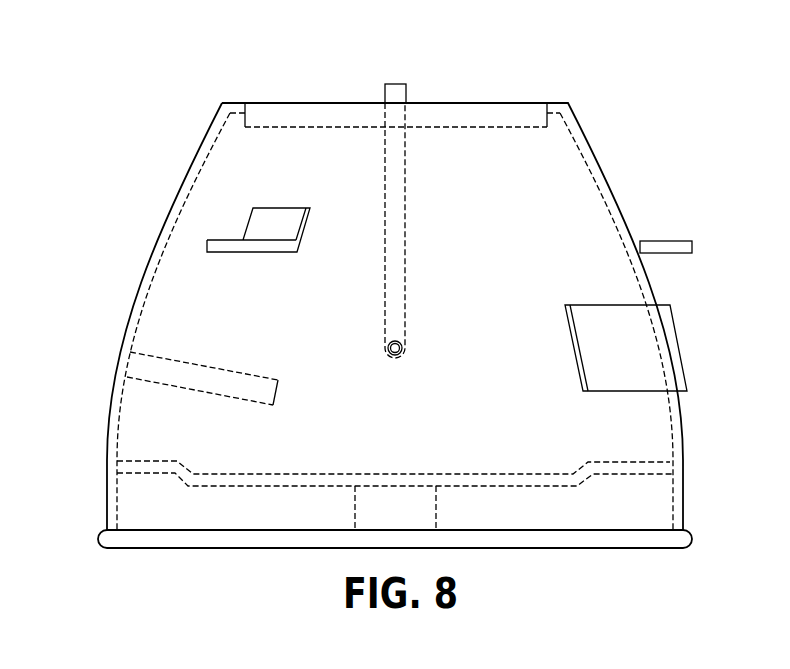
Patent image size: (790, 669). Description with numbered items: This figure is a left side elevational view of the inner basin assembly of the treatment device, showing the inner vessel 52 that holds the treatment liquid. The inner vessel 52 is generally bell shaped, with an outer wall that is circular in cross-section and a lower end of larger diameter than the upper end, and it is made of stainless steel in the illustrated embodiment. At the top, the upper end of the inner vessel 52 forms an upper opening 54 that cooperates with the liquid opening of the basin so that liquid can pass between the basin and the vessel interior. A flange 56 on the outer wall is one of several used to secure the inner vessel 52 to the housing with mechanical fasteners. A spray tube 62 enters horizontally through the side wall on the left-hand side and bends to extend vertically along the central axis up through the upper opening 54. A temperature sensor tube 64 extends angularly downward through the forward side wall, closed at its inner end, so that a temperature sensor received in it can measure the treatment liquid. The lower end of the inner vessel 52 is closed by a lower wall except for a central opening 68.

The inner vessel 52 is at (142, 140).
The upper opening 54 is at (297, 125).
The flange 56 is at (677, 240).
The spray tube 62 is at (397, 83).
The temperature sensor tube 64 is at (173, 387).
The central opening 68 is at (437, 503).